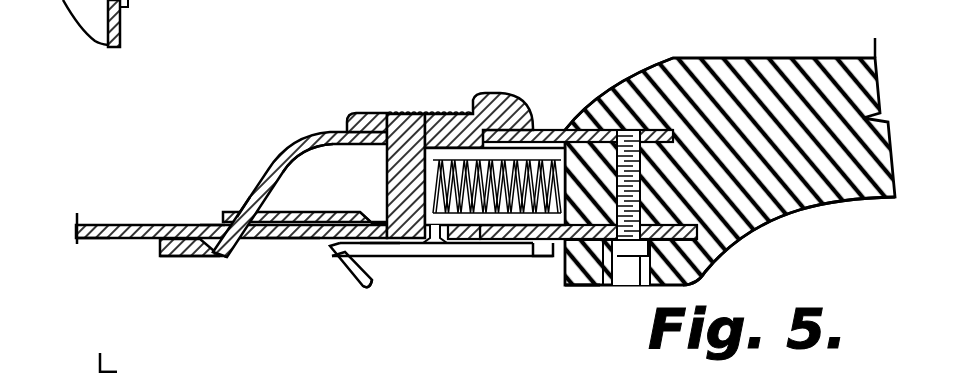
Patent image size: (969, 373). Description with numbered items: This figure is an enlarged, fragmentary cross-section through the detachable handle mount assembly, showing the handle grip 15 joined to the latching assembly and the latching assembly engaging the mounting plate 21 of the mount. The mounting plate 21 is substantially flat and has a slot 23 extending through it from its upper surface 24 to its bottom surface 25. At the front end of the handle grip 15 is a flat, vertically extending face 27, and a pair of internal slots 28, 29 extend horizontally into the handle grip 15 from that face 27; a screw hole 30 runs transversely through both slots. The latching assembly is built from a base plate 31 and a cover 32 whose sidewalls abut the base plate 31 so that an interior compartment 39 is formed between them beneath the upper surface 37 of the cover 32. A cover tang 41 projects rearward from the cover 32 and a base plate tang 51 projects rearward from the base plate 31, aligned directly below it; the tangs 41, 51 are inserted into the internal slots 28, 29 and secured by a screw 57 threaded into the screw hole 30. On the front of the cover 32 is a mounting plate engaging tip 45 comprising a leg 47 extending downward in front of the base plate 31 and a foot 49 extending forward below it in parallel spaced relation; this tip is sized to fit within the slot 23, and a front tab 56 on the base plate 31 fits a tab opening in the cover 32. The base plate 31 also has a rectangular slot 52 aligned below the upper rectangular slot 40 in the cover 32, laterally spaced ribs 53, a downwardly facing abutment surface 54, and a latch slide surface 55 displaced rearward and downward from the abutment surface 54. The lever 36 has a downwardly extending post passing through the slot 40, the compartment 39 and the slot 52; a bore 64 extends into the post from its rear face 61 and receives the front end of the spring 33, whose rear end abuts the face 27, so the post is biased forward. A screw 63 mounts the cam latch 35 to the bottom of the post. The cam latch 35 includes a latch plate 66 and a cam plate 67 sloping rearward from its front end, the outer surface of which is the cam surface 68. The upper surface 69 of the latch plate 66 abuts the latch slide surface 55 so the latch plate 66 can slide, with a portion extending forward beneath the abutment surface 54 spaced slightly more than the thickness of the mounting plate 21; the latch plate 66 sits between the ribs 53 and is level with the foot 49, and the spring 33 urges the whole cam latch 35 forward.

The handle grip 15 is at (770, 56).
The mounting plate 21 is at (80, 222).
The slot 23 is at (157, 359).
The upper surface 24 is at (113, 224).
The bottom surface 25 is at (97, 241).
The face 27 is at (540, 245).
The internal slot 28 is at (653, 127).
The internal slot 29 is at (716, 271).
The screw hole 30 is at (628, 292).
The base plate 31 is at (243, 210).
The cover 32 is at (265, 170).
The spring 33 is at (463, 253).
The cam latch 35 is at (307, 213).
The lever 36 is at (520, 92).
The upper surface 37 is at (337, 128).
The interior compartment 39 is at (270, 162).
The upper rectangular slot 40 is at (510, 128).
The cover tang 41 is at (582, 125).
The mounting plate engaging tip 45 is at (220, 257).
The leg 47 is at (228, 246).
The foot 49 is at (173, 257).
The base plate tang 51 is at (569, 285).
The rectangular slot 52 is at (488, 253).
The ribs 53 is at (520, 245).
The downwardly facing abutment surface 54 is at (297, 240).
The latch slide surface 55 is at (380, 246).
The front tab 56 is at (213, 212).
The screw 57 is at (630, 128).
The rear face 61 is at (485, 140).
The screw 63 is at (440, 255).
The bore 64 is at (417, 128).
The latch plate 66 is at (412, 260).
The cam plate 67 is at (360, 291).
The cam surface 68 is at (338, 264).
The upper surface 69 is at (376, 222).